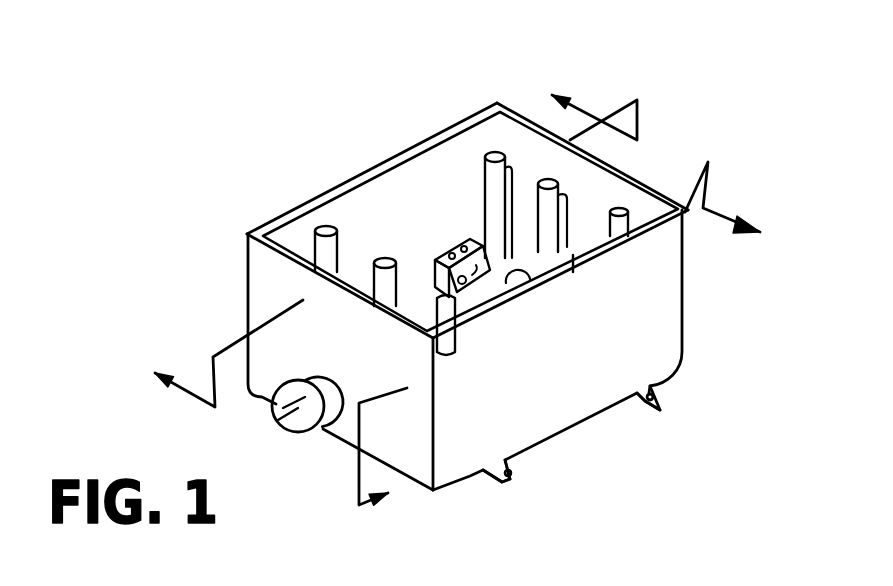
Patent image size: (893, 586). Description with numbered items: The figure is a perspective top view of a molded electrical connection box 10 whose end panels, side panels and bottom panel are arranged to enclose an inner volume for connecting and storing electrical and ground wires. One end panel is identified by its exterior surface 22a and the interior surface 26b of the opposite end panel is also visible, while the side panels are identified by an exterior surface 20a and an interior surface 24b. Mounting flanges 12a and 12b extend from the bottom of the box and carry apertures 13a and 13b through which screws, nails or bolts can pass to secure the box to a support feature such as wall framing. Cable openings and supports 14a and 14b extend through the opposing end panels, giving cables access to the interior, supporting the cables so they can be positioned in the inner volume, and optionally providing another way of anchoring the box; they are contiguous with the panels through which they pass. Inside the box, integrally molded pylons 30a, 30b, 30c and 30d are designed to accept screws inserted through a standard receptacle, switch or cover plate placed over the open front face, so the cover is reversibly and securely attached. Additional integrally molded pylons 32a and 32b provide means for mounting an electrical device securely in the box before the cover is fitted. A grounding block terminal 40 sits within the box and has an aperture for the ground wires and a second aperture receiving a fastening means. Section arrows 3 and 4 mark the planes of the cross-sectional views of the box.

The molded electrical connection box 10 is at (242, 40).
The mounting flange 12a is at (516, 480).
The mounting flange 12b is at (662, 408).
The aperture 13a is at (515, 470).
The aperture 13b is at (660, 392).
The cable opening and support 14a is at (300, 433).
The cable opening and support 14b is at (573, 272).
The side panel exterior surface 20a is at (560, 297).
The end panel exterior surface 22a is at (340, 302).
The side panel interior surface 24b is at (394, 196).
The end panel interior surface 26b is at (600, 183).
The pylon 30a is at (490, 152).
The pylon 30b is at (318, 224).
The pylon 30c is at (447, 352).
The pylon 30d is at (620, 246).
The pylon 32a is at (548, 180).
The pylon 32b is at (377, 263).
The block terminal 40 is at (460, 250).
The section line 3- 3 is at (383, 229).
The section line 4- 4 is at (574, 353).